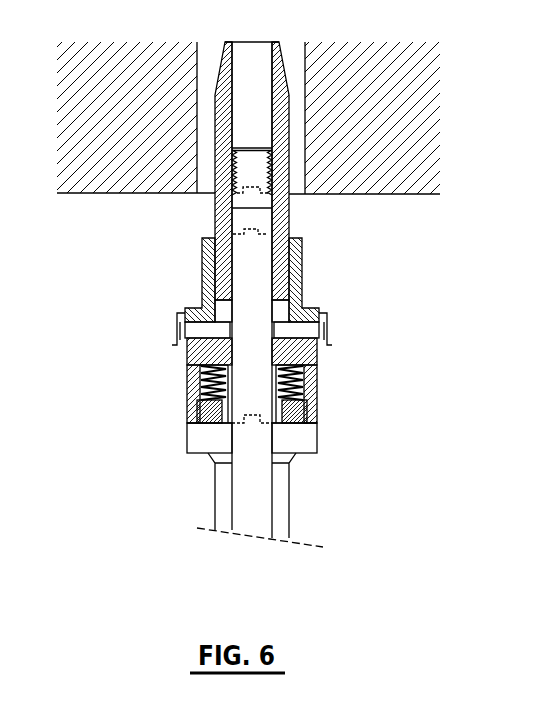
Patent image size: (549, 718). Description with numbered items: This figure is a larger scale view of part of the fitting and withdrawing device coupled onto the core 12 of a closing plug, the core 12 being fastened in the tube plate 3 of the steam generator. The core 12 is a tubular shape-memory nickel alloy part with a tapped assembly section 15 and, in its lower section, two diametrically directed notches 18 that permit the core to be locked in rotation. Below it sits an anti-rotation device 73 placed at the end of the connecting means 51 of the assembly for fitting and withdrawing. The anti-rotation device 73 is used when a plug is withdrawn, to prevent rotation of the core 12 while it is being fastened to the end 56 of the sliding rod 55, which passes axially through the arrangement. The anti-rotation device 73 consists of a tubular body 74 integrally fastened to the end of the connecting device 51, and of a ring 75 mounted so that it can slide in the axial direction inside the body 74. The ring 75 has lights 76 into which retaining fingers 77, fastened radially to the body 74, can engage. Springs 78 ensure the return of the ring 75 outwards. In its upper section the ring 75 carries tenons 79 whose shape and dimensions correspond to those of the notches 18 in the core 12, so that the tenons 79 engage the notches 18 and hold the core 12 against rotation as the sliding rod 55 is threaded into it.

The tube plate 3 is at (163, 90).
The core 12 is at (282, 113).
The tapped assembly section 15 is at (272, 163).
The notches 18 is at (268, 188).
The connecting means 51 is at (282, 508).
The sliding rod 55 is at (262, 268).
The end of the sliding rod 56 is at (250, 167).
The anti-rotation device 73 is at (374, 352).
The tubular body 74 is at (297, 288).
The ring 75 is at (212, 268).
The lights 76 is at (220, 308).
The retaining fingers 77 is at (307, 330).
The springs 78 is at (315, 378).
The tenons 79 is at (243, 204).